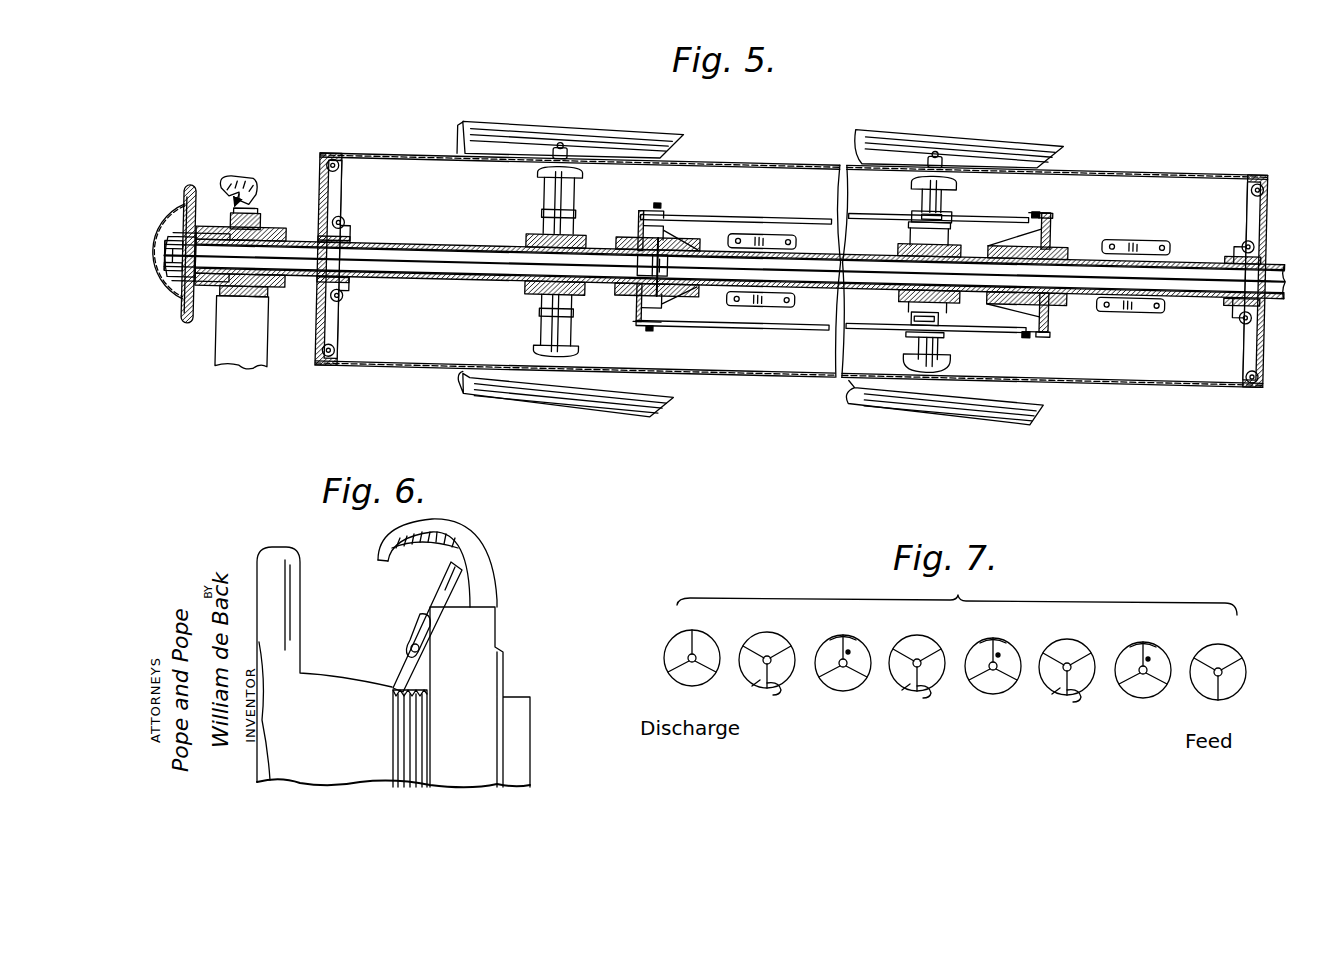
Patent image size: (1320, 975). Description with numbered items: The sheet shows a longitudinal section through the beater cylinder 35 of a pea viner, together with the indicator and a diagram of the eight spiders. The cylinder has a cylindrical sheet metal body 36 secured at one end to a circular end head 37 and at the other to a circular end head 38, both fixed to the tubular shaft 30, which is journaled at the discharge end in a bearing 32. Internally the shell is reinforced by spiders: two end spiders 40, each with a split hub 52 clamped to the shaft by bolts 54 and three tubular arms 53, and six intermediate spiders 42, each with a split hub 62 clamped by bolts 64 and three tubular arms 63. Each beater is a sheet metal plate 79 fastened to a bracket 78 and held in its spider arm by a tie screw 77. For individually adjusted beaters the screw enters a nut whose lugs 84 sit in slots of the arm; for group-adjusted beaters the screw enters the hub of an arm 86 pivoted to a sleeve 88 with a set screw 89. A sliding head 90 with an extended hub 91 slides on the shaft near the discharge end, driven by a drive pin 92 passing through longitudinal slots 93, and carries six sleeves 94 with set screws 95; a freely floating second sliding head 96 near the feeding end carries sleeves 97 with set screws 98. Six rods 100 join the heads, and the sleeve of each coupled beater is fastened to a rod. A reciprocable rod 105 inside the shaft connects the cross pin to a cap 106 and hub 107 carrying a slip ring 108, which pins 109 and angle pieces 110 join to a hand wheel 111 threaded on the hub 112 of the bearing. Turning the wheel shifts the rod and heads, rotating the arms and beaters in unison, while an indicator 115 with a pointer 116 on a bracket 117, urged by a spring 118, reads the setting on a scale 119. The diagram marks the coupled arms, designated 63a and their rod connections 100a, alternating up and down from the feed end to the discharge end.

In FIG. 5, the tubular shaft 30 is at (436, 278).
In FIG. 5, the bearing 32 is at (236, 300).
In FIG. 6, the bearing 32 is at (478, 628).
In FIG. 5, the beater cylinder 35 is at (800, 372).
In FIG. 5, the cylindrical sheet metal body 36 is at (847, 376).
In FIG. 5, the circular end head 37 is at (1268, 188).
In FIG. 5, the circular end head 38 is at (342, 190).
In FIG. 5, the end spider 40 is at (538, 190).
In FIG. 7, the end spider 40 is at (702, 644).
In FIG. 5, the intermediate spider 42 is at (792, 225).
In FIG. 7, the intermediate spider 42 is at (775, 648).
In FIG. 5, the hub 52 is at (528, 235).
In FIG. 5, the tubular arm 53 is at (545, 198).
In FIG. 5, the bolt 54 is at (1114, 294).
In FIG. 5, the hub 62 is at (765, 224).
In FIG. 5, the tubular arm 63 is at (946, 330).
In FIG. 7, the tubular arm 63 is at (778, 690).
In FIG. 5, the bolt 64 is at (790, 296).
In FIG. 5, the tie screw 77 is at (562, 142).
In FIG. 5, the bracket 78 is at (565, 142).
In FIG. 5, the beater plate 79 is at (553, 126).
In FIG. 5, the lug 84 is at (943, 302).
In FIG. 5, the arm 86 is at (916, 200).
In FIG. 5, the sleeve 88 is at (944, 212).
In FIG. 5, the set screw 89 is at (910, 212).
In FIG. 5, the sliding head 90 is at (642, 226).
In FIG. 5, the hub 91 is at (683, 236).
In FIG. 5, the drive pin 92 is at (642, 296).
In FIG. 5, the longitudinal slot 93 is at (674, 258).
In FIG. 5, the sleeve 94 is at (665, 209).
In FIG. 5, the set screw 95 is at (660, 196).
In FIG. 5, the sliding head 96 is at (1053, 215).
In FIG. 5, the sleeve 97 is at (1050, 196).
In FIG. 5, the set screw 98 is at (1037, 195).
In FIG. 5, the rod 100 is at (860, 201).
In FIG. 7, the rod 100 is at (852, 651).
In FIG. 7, the bar marker 100a is at (762, 672).
In FIG. 7, the spindle marker 63a is at (836, 640).
In FIG. 5, the reciprocable rod 105 is at (413, 246).
In FIG. 5, the cap 106 is at (183, 305).
In FIG. 5, the hub 107 is at (168, 262).
In FIG. 5, the slip ring 108 is at (168, 240).
In FIG. 5, the pin 109 is at (177, 236).
In FIG. 5, the angle piece 110 is at (200, 236).
In FIG. 5, the hand wheel 111 is at (192, 328).
In FIG. 6, the hand wheel 111 is at (288, 608).
In FIG. 5, the hub 112 is at (238, 210).
In FIG. 6, the hub 112 is at (393, 732).
In FIG. 5, the indicator 115 is at (250, 190).
In FIG. 6, the indicator 115 is at (440, 572).
In FIG. 6, the pointer 116 is at (455, 580).
In FIG. 6, the bracket 117 is at (417, 620).
In FIG. 6, the spring 118 is at (405, 628).
In FIG. 6, the scale 119 is at (444, 530).